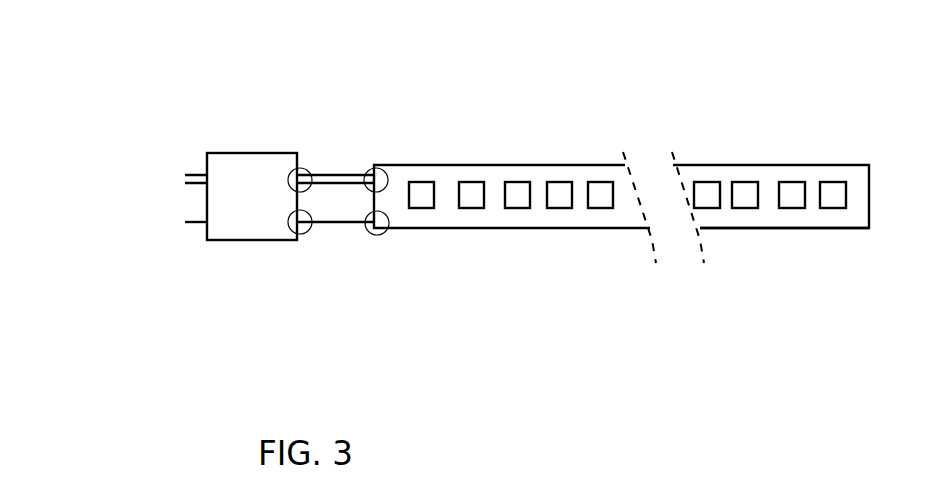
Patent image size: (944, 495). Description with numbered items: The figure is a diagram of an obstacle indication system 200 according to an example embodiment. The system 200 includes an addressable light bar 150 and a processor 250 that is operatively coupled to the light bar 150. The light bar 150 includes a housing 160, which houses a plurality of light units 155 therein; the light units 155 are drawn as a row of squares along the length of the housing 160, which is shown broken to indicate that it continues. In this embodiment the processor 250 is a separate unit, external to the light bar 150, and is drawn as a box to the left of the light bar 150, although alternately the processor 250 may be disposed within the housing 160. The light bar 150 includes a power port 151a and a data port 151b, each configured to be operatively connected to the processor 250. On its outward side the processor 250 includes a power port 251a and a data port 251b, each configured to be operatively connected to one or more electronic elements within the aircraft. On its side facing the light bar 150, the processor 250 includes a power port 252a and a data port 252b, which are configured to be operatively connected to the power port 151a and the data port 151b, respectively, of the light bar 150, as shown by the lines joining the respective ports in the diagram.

The obstacle indication system 200 is at (222, 110).
The processor 250 is at (265, 182).
The power port 251a is at (183, 173).
The data port 251b is at (175, 218).
The power port 252a is at (300, 170).
The data port 252b is at (302, 232).
The addressable light bar 150 is at (395, 183).
The power port 151a is at (365, 172).
The data port 151b is at (372, 240).
The light units 155 is at (517, 195).
The housing 160 is at (765, 228).